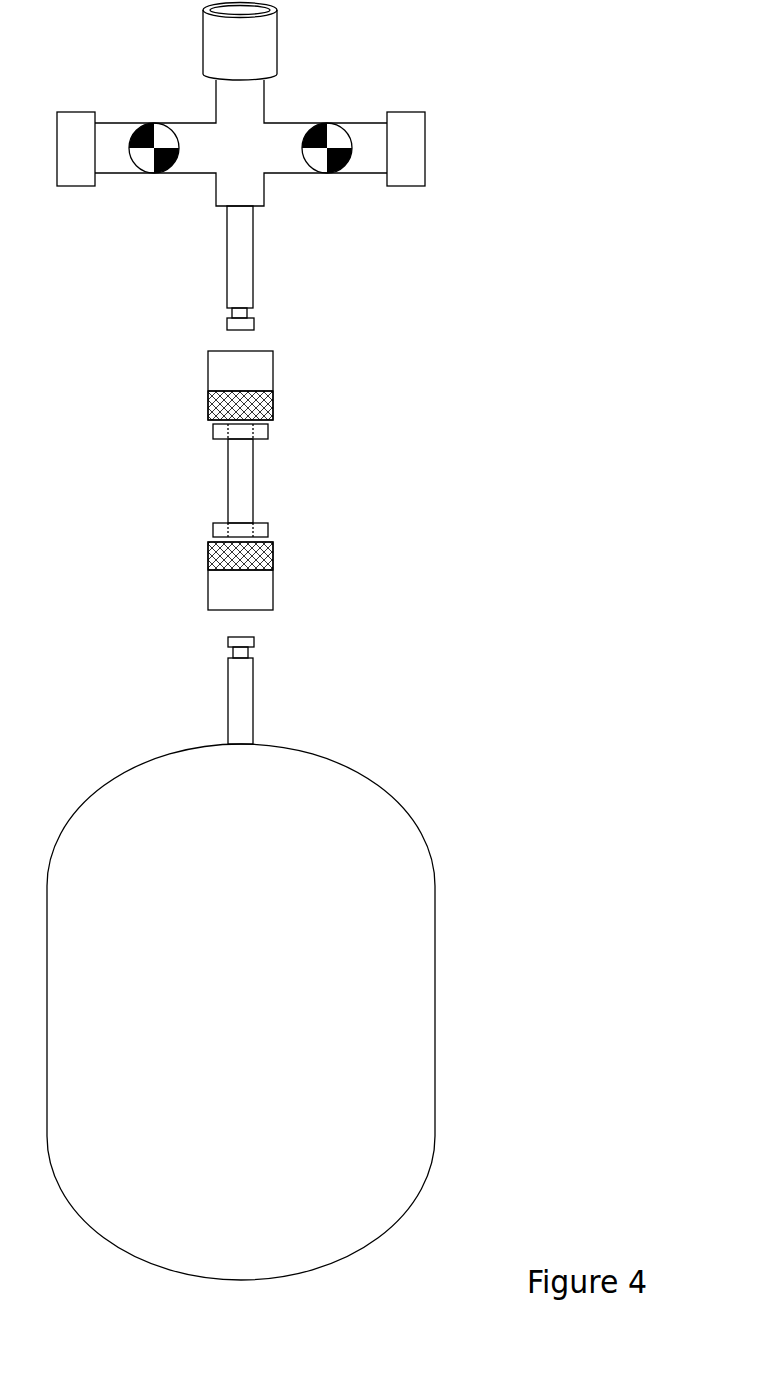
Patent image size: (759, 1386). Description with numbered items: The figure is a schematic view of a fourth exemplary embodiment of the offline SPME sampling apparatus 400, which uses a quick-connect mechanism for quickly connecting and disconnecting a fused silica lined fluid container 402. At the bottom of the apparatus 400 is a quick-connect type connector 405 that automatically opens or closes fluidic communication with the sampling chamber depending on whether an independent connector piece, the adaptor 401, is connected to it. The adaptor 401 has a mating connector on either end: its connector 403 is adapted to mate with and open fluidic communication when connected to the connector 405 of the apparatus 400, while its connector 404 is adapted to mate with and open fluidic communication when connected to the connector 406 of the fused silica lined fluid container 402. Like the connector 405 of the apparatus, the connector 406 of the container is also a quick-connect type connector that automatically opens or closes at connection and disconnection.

The SPME sampling apparatus 400 is at (368, 249).
The adaptor 401 is at (332, 460).
The fused silica lined fluid container 402 is at (407, 813).
The connector 403 is at (208, 369).
The connector 404 is at (208, 591).
The quick-connect type connector 405 is at (227, 270).
The quick-connect type connector 406 is at (253, 697).